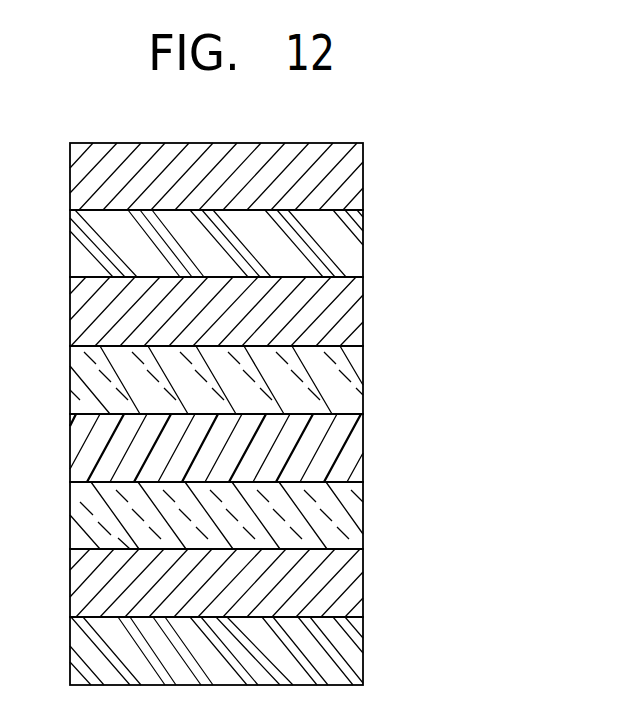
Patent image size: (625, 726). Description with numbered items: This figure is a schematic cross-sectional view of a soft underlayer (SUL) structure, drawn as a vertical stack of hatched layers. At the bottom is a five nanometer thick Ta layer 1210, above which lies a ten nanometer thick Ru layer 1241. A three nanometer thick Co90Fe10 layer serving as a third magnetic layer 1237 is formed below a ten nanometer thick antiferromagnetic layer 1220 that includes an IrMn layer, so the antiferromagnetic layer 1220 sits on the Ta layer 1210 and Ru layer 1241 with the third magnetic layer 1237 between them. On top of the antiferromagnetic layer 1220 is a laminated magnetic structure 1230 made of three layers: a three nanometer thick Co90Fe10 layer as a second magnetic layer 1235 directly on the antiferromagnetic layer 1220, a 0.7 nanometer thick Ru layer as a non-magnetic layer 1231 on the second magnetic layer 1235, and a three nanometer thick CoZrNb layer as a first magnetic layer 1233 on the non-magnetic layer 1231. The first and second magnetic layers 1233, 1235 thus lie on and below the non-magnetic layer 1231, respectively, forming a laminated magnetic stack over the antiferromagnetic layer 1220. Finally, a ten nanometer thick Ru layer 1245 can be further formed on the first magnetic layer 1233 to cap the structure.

The Ru layer 1245 is at (349, 183).
The first magnetic layer 1233 is at (349, 252).
The non-magnetic layer 1231 is at (349, 320).
The second magnetic layer 1235 is at (265, 380).
The laminated magnetic structure 1230 is at (305, 312).
The antiferromagnetic layer 1220 is at (349, 452).
The third magnetic layer 1237 is at (349, 519).
The Ru layer 1241 is at (349, 586).
The Ta layer 1210 is at (349, 654).